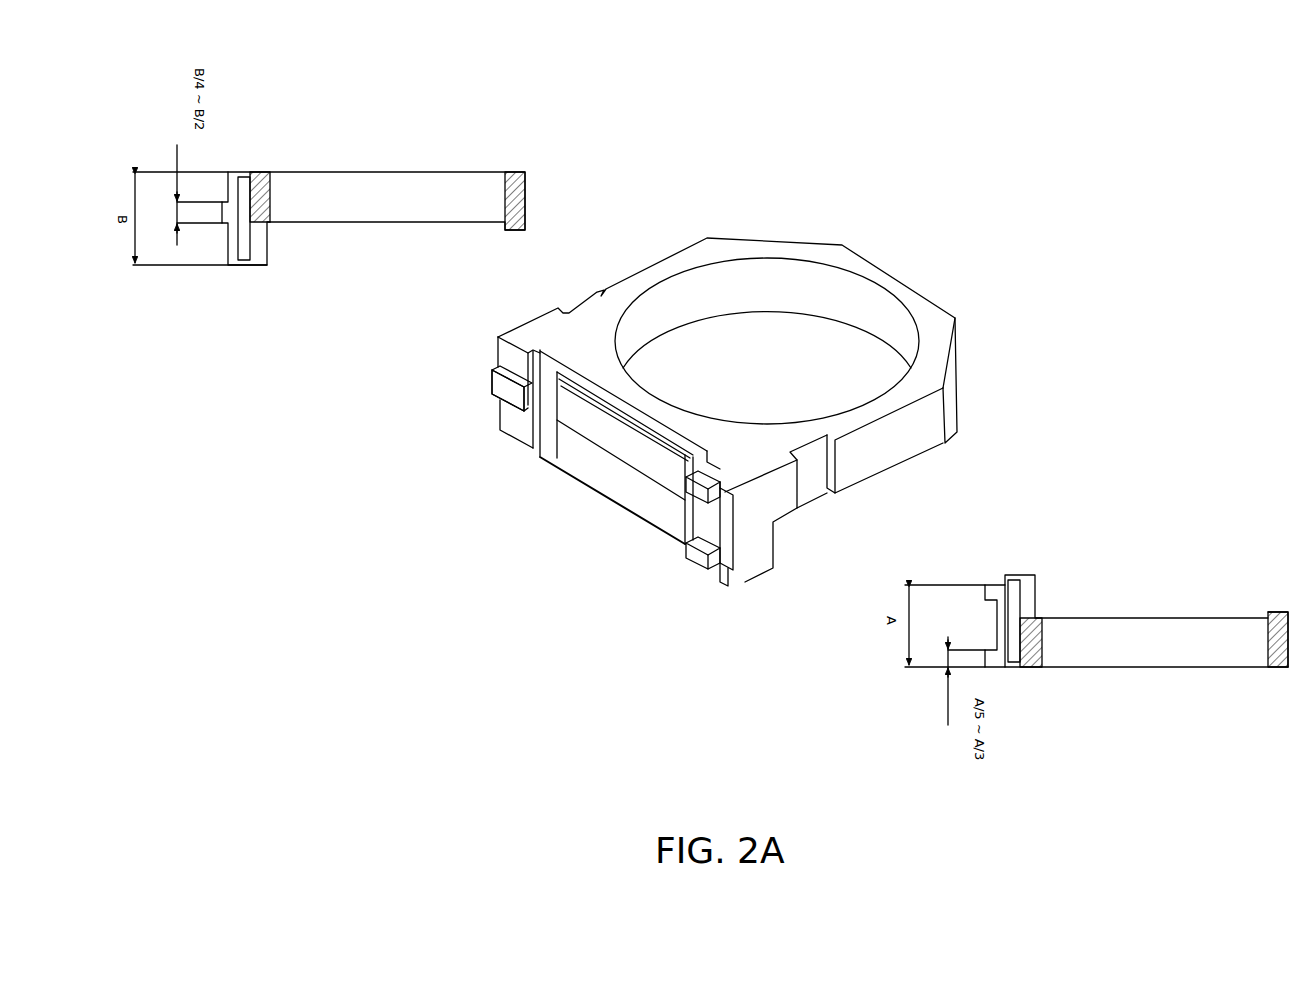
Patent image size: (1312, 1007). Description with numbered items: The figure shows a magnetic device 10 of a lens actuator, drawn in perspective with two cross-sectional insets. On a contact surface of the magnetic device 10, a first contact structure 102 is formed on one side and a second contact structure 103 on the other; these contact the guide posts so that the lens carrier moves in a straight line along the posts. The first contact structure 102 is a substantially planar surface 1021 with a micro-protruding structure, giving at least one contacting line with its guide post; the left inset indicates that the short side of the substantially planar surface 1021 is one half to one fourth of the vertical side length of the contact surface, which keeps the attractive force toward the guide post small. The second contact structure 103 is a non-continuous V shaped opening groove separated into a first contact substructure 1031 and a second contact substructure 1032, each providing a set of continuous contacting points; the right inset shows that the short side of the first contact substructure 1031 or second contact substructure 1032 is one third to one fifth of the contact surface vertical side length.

The magnetic device 10 is at (992, 157).
The first contact structure 102 is at (377, 357).
The substantially planar surface 1021 is at (223, 222).
The second contact structure 103 is at (775, 564).
The first contact substructure 1031 is at (988, 593).
The second contact substructure 1032 is at (988, 653).